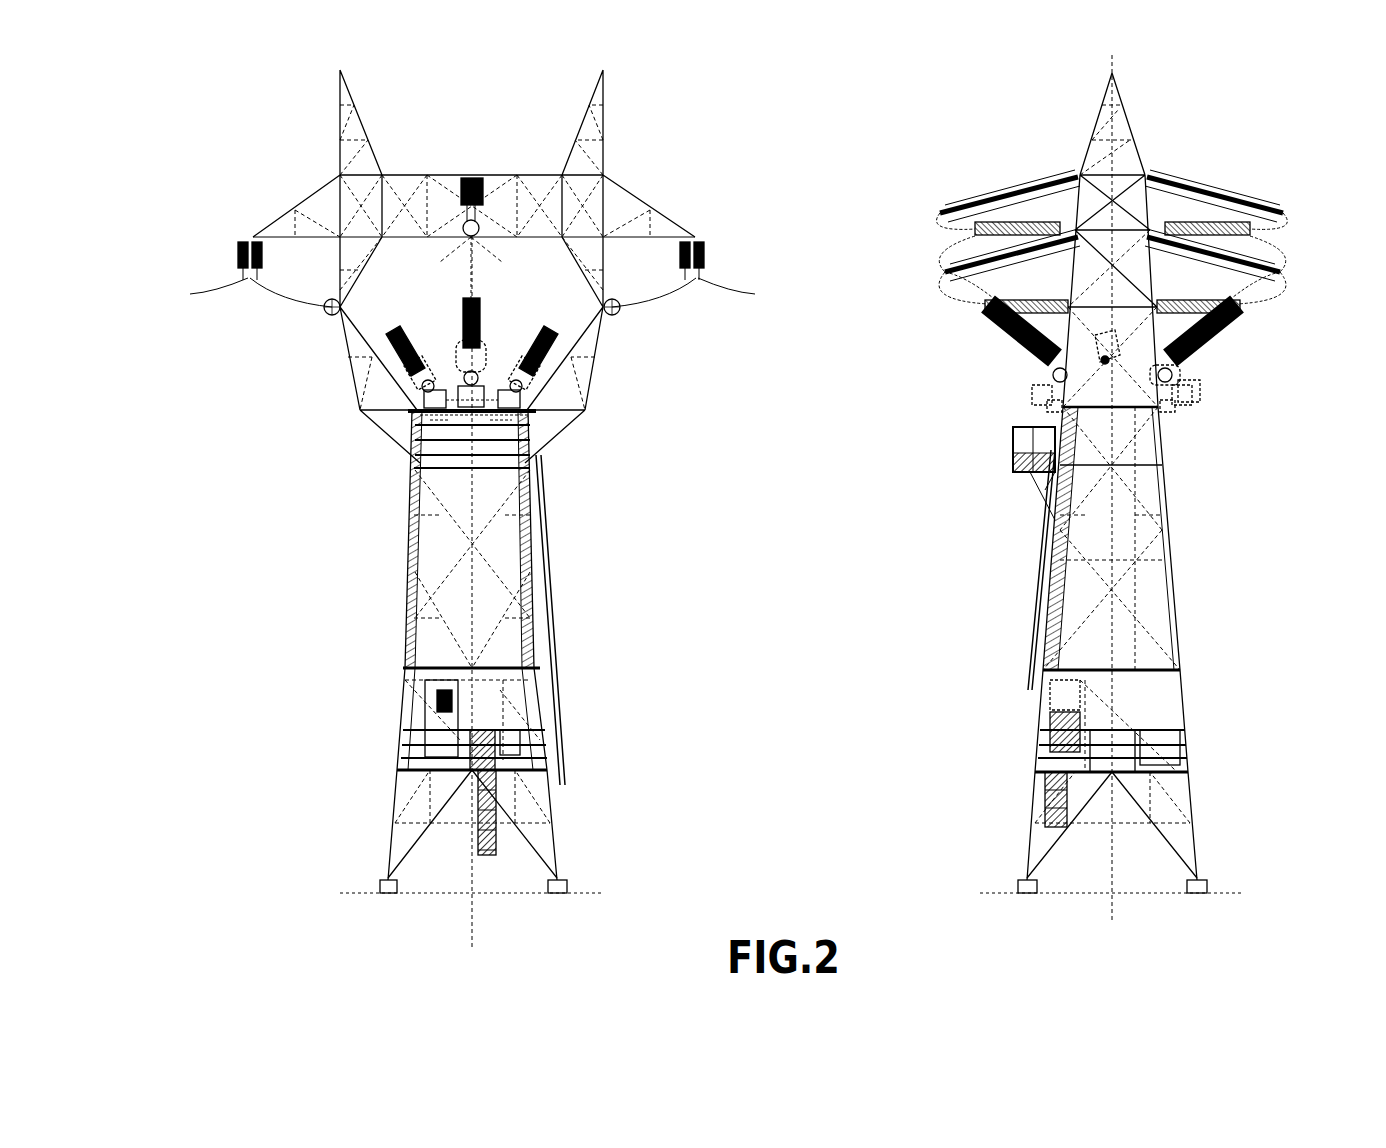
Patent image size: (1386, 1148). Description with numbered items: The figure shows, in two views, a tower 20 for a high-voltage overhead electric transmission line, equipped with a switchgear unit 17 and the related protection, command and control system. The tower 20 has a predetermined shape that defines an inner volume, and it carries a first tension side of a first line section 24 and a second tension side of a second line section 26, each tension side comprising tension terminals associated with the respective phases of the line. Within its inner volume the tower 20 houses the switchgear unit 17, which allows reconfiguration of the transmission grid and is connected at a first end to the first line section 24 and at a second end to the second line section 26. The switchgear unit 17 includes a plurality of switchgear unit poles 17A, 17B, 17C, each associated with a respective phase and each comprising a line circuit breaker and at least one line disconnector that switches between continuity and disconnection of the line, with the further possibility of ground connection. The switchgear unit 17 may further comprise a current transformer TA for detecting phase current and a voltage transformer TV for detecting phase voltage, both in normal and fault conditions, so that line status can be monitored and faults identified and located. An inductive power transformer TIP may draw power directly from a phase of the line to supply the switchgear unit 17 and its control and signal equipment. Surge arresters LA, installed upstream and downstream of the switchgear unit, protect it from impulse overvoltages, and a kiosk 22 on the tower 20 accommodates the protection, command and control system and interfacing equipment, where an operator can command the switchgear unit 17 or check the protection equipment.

The switchgear unit 17 is at (406, 398).
The switchgear unit pole 17A is at (555, 332).
The switchgear unit pole 17B is at (483, 393).
The switchgear unit pole 17C is at (393, 332).
The tower 20 is at (540, 598).
The kiosk 22 is at (482, 713).
The first line section 24 is at (950, 213).
The second line section 26 is at (1283, 212).
The voltage transformer TV is at (483, 393).
The inductive power transformer TIP is at (820, 317).
The current transformer TA is at (1167, 365).
The surge arrester LA is at (1190, 227).